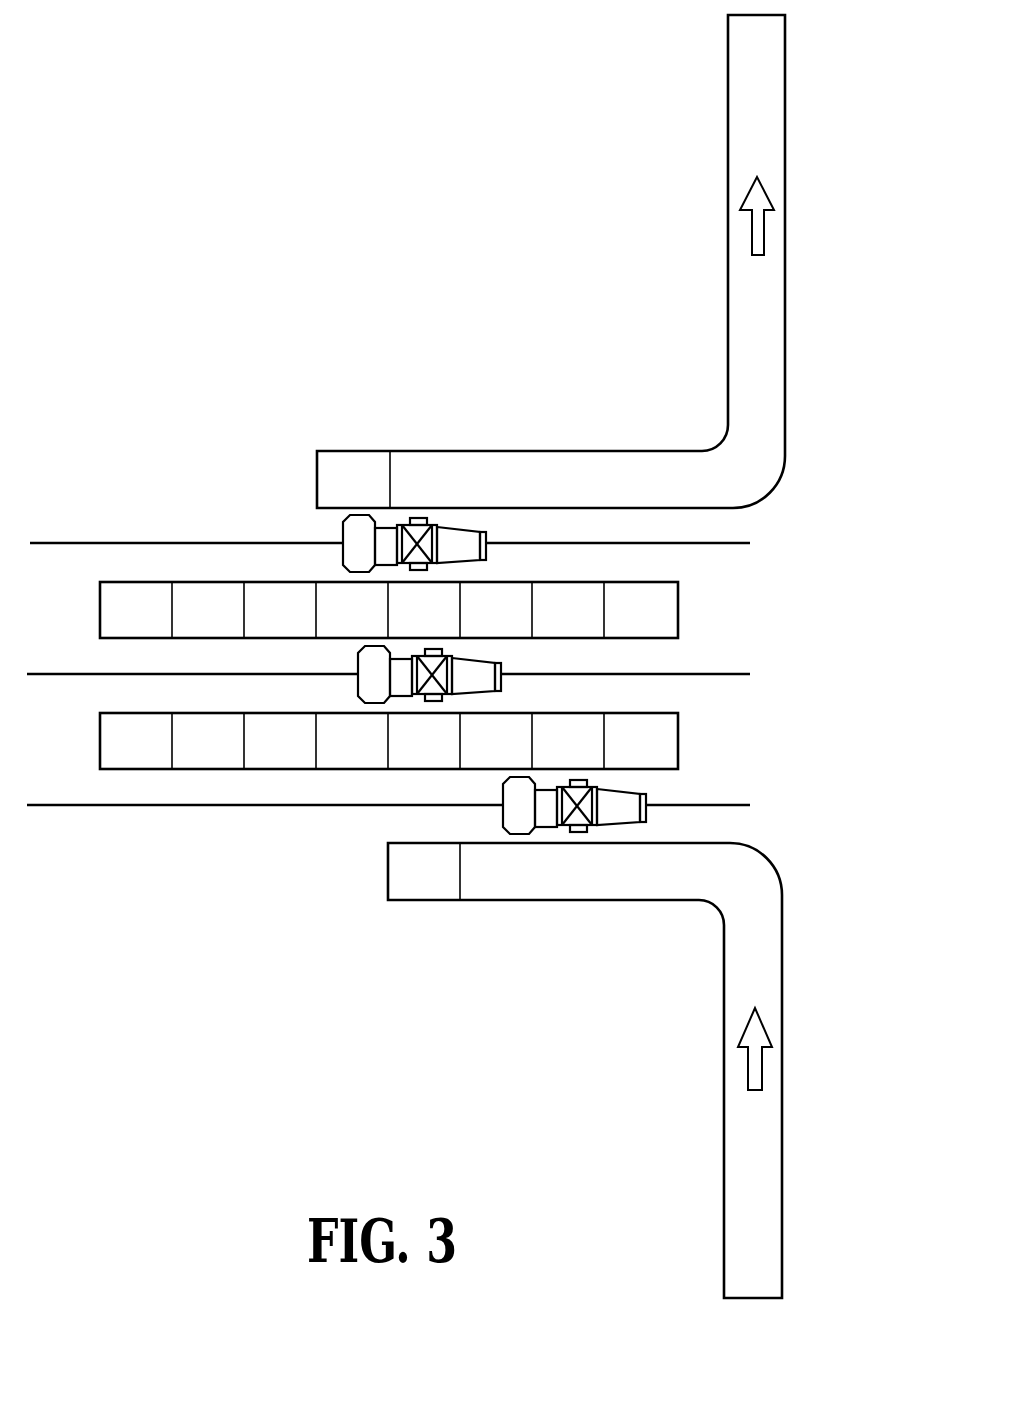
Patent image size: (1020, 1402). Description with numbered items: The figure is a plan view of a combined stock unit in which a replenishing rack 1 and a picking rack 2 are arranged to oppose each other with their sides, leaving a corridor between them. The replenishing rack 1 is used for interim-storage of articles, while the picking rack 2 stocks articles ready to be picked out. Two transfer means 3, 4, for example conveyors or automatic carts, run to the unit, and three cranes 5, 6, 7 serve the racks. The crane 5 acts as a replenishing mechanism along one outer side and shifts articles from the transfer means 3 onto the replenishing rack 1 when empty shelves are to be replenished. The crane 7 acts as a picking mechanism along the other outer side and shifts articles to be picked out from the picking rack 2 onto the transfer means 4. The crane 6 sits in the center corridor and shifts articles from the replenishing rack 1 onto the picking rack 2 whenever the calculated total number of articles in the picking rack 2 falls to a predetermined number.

The replenishing rack 1 is at (668, 742).
The picking rack 2 is at (668, 612).
The transfer means 3 is at (775, 973).
The transfer means 4 is at (776, 318).
The crane 5 is at (616, 812).
The crane 6 is at (471, 681).
The crane 7 is at (470, 552).